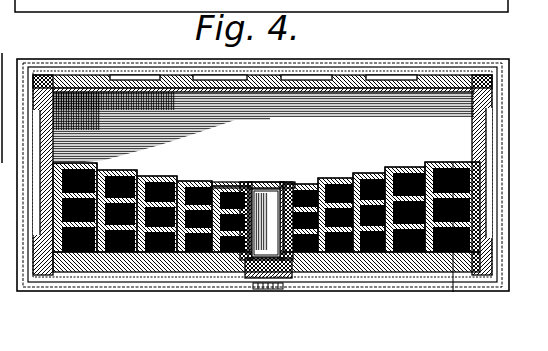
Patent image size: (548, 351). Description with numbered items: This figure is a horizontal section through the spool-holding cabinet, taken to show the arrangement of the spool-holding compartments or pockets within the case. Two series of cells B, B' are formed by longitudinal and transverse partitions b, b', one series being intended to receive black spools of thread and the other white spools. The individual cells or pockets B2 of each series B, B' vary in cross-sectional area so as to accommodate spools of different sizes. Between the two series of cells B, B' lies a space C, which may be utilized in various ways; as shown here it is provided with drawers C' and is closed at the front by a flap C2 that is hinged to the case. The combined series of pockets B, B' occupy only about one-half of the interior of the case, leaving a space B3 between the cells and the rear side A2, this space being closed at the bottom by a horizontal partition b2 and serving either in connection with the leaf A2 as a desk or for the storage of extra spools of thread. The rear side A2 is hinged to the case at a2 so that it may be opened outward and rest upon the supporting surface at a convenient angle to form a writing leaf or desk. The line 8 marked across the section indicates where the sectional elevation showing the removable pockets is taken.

The rear side A2 is at (97, 75).
The hinge a2 is at (144, 74).
The series of cells B is at (266, 189).
The series of cells B' is at (266, 171).
The cells or pockets B2 is at (228, 183).
The space B3 is at (278, 128).
The longitudinal partitions b is at (266, 189).
The transverse partitions b' is at (266, 194).
The horizontal partition b2 is at (365, 129).
The space C is at (263, 246).
The drawers C' is at (266, 223).
The flap C2 is at (281, 282).
The section line 8 is at (468, 168).